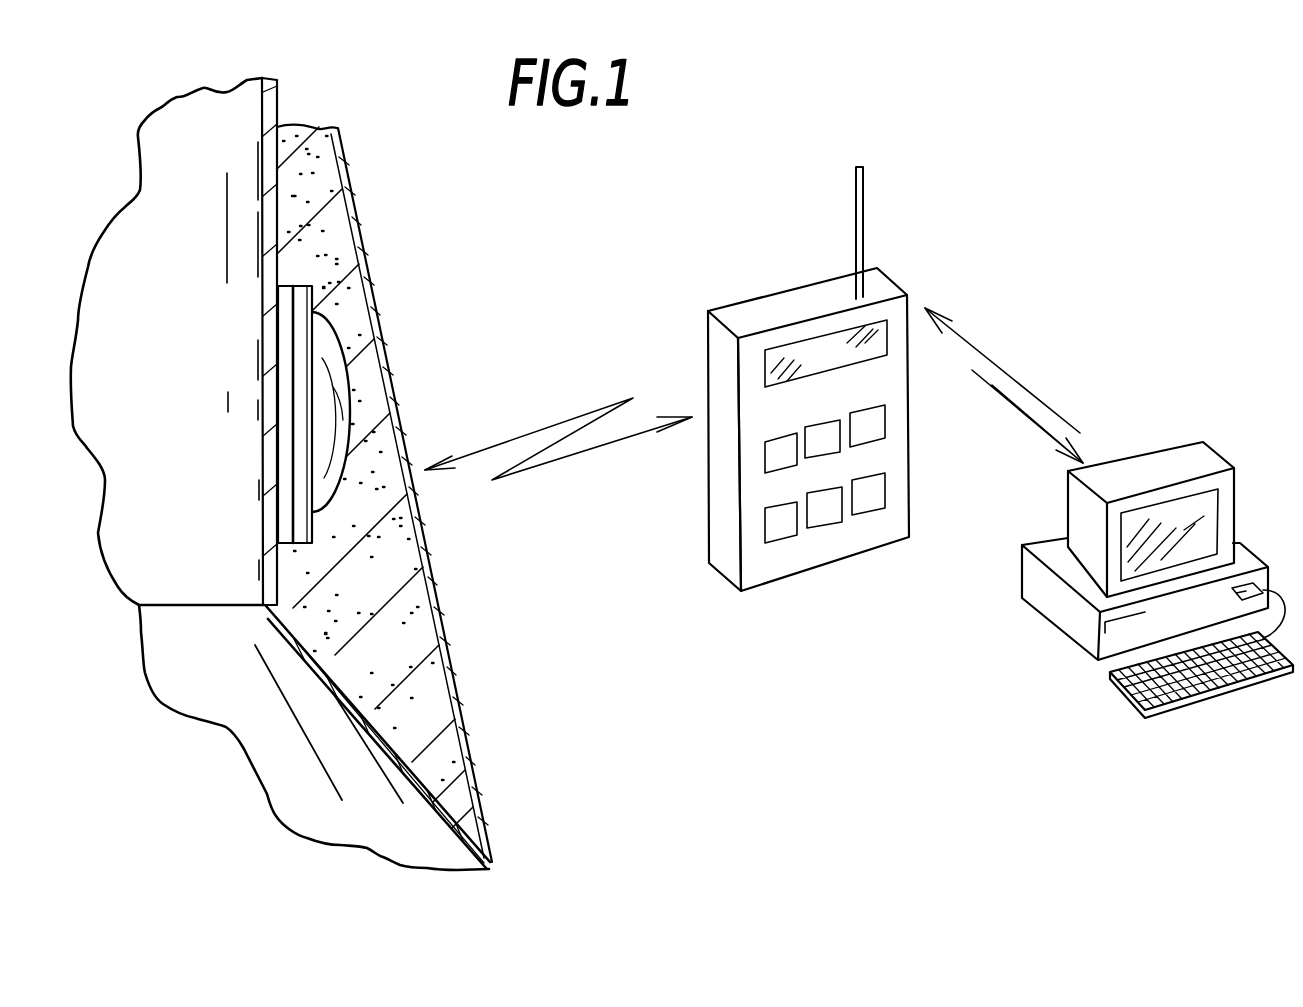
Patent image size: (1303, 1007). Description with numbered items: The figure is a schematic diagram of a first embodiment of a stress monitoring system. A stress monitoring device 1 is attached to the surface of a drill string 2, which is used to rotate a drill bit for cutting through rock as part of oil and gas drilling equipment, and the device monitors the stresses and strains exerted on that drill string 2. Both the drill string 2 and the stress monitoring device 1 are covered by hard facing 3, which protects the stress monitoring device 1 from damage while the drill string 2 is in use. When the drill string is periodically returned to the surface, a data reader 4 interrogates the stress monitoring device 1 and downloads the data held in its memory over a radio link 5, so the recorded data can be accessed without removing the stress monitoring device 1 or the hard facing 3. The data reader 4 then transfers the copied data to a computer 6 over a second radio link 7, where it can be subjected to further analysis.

The stress monitoring device 1 is at (340, 336).
The drill string 2 is at (278, 96).
The hard facing 3 is at (405, 648).
The data reader 4 is at (798, 297).
The radio link 5 is at (548, 462).
The computer 6 is at (1172, 463).
The second radio link 7 is at (982, 353).